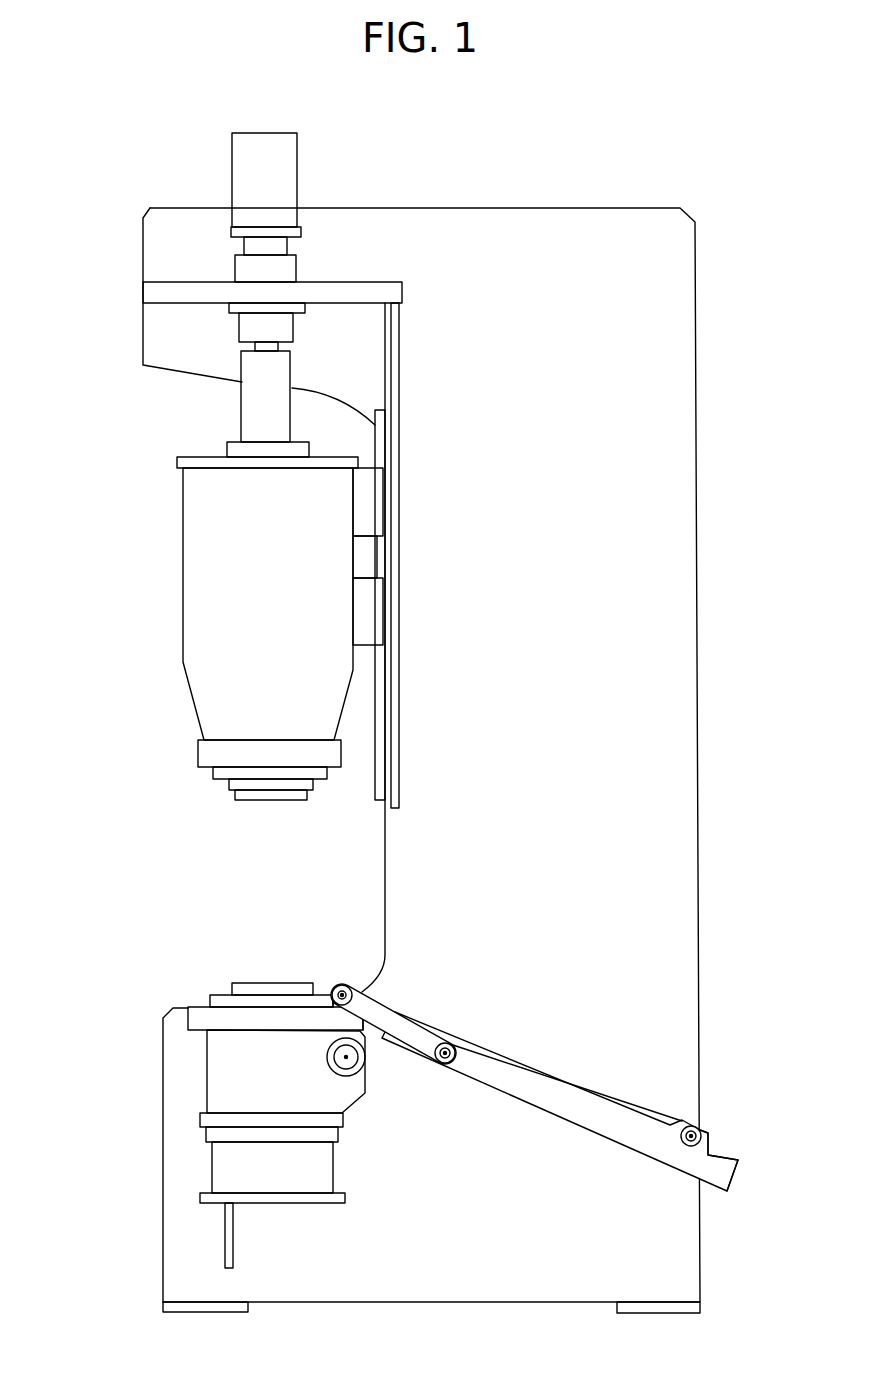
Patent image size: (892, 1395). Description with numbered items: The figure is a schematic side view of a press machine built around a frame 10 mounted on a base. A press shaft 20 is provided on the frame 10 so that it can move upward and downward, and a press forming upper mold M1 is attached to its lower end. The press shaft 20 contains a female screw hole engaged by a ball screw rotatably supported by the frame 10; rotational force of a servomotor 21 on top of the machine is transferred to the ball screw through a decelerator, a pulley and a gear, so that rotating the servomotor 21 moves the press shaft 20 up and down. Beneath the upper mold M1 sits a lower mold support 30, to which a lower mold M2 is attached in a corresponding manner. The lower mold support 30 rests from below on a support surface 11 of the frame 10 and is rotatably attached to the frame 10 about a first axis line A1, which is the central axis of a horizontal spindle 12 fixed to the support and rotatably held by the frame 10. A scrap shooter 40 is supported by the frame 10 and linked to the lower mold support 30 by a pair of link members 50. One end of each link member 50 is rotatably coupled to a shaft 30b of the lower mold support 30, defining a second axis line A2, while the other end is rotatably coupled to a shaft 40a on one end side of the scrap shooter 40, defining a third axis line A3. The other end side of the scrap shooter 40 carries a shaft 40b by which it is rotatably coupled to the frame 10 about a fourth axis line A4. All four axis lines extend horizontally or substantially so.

The frame 10 is at (698, 547).
The support surface 11 is at (225, 1113).
The spindle 12 is at (346, 1062).
The press shaft 20 is at (183, 530).
The servomotor 21 is at (297, 163).
The lower mold support 30 is at (207, 1073).
The shaft 30b is at (344, 984).
The scrap shooter 40 is at (572, 1124).
The shaft 40a is at (447, 1043).
The shaft 40b is at (703, 1128).
The link member 50 is at (382, 1002).
The first axis line A1 is at (358, 1060).
The second axis line A2 is at (337, 988).
The third axis line A3 is at (456, 1050).
The fourth axis line A4 is at (689, 1125).
The upper mold M1 is at (235, 794).
The lower mold M2 is at (232, 988).